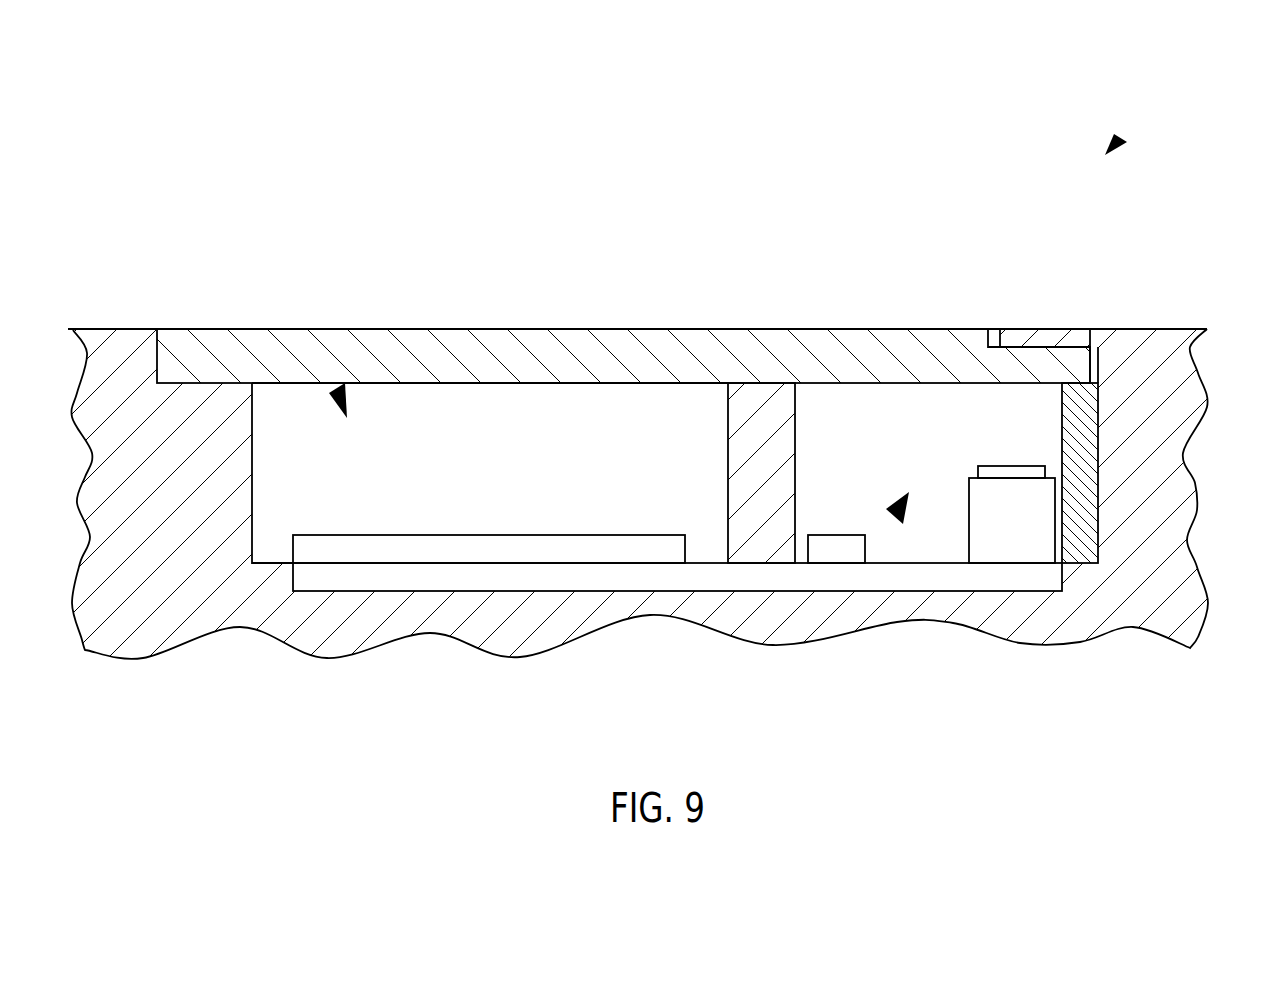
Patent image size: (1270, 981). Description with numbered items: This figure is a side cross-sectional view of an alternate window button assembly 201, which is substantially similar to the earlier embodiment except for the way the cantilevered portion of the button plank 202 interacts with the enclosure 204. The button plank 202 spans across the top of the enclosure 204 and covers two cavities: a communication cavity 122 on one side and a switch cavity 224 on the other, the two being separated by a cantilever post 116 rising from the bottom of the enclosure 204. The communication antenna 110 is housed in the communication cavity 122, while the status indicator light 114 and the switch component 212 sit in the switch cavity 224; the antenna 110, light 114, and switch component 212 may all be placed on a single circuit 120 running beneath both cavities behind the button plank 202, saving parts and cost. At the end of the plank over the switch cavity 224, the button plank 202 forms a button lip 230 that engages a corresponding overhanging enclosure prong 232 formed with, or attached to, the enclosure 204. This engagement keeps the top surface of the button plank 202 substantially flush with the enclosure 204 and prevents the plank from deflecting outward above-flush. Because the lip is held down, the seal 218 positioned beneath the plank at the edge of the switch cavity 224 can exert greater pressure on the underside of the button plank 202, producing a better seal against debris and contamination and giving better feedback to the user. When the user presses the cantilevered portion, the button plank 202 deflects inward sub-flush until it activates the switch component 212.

The window button assembly 201 is at (1115, 143).
The button plank 202 is at (546, 352).
The enclosure 204 is at (150, 600).
The communication cavity 122 is at (341, 385).
The cantilever post 116 is at (768, 410).
The seal 218 is at (1078, 415).
The button lip 230 is at (1030, 362).
The overhanging enclosure prong 232 is at (1052, 340).
The communication antenna 110 is at (470, 545).
The single circuit 120 is at (674, 580).
The status indicator light 114 is at (835, 548).
The switch component 212 is at (1013, 527).
The switch cavity 224 is at (900, 512).